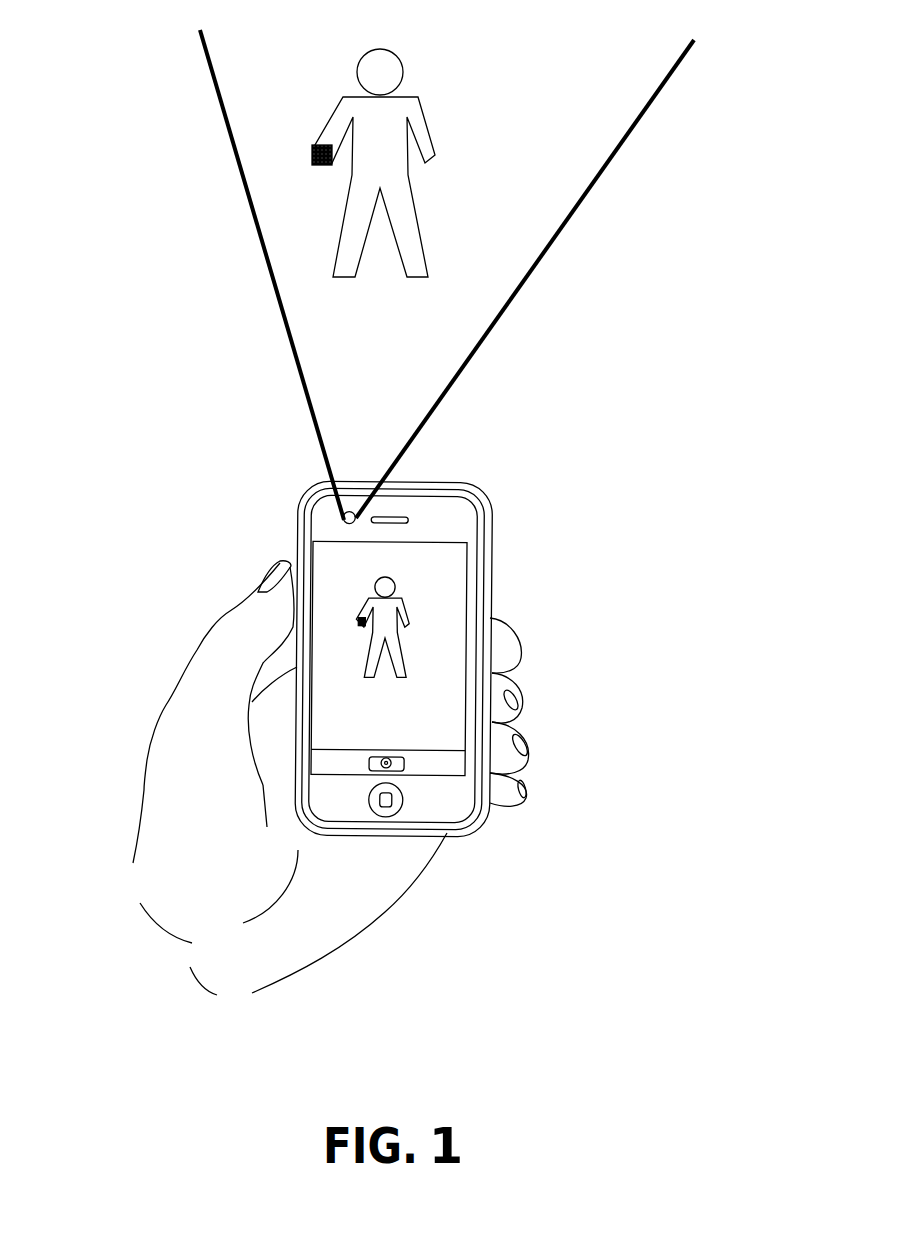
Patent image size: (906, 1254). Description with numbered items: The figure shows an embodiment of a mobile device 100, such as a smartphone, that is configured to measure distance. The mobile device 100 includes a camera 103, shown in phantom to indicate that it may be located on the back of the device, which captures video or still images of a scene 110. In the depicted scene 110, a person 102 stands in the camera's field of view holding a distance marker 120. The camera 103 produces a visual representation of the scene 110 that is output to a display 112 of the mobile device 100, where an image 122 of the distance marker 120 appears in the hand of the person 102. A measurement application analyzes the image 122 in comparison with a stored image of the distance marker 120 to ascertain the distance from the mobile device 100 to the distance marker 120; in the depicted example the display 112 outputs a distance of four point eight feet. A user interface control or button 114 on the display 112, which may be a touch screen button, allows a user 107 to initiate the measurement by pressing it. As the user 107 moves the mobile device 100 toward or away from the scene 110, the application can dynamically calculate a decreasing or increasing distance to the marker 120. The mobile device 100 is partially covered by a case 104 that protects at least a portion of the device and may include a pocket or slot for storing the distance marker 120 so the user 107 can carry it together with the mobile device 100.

The mobile device 100 is at (312, 479).
The person 102 is at (431, 130).
The camera 103 is at (343, 520).
The case 104 is at (297, 732).
The user 107 is at (200, 665).
The scene 110 is at (468, 55).
The display 112 is at (432, 620).
The user interface control (button) 114 is at (364, 761).
The distance marker 120 is at (320, 143).
The image of the distance marker 122 is at (355, 619).